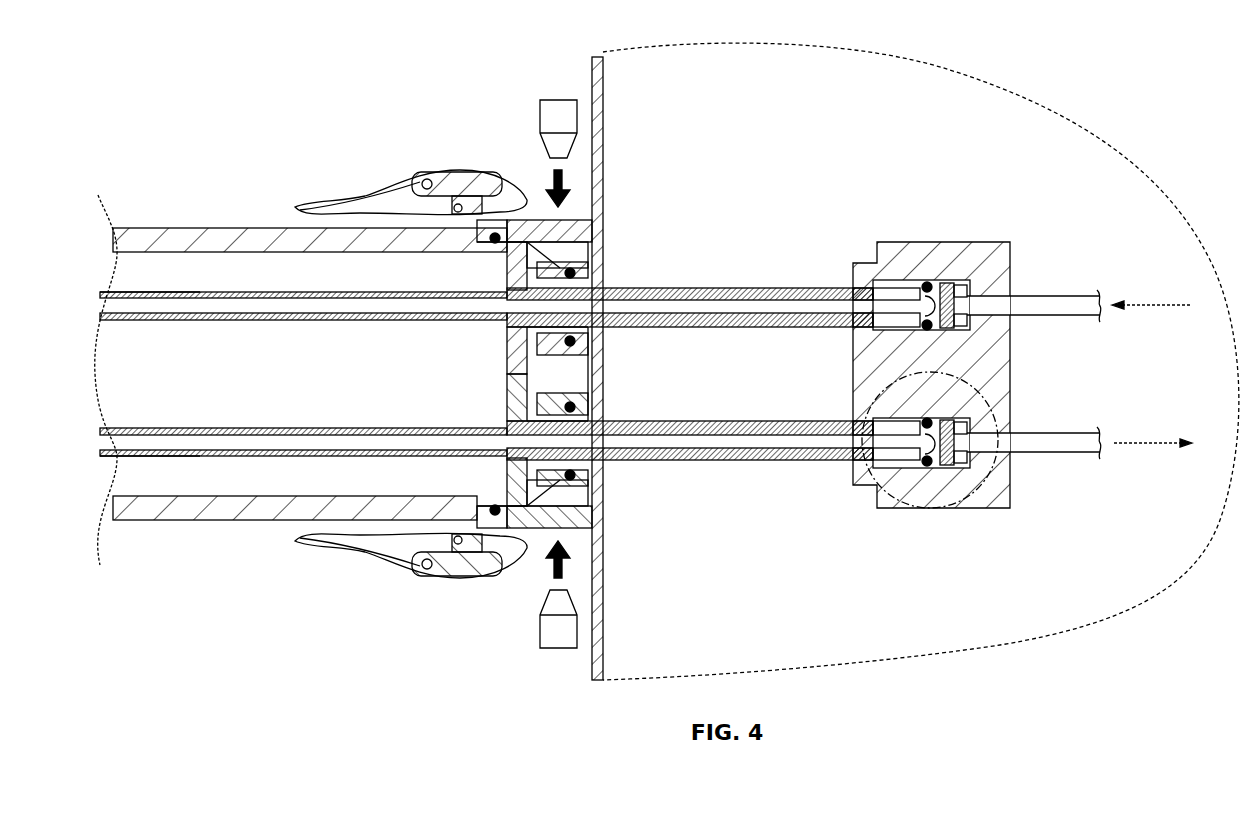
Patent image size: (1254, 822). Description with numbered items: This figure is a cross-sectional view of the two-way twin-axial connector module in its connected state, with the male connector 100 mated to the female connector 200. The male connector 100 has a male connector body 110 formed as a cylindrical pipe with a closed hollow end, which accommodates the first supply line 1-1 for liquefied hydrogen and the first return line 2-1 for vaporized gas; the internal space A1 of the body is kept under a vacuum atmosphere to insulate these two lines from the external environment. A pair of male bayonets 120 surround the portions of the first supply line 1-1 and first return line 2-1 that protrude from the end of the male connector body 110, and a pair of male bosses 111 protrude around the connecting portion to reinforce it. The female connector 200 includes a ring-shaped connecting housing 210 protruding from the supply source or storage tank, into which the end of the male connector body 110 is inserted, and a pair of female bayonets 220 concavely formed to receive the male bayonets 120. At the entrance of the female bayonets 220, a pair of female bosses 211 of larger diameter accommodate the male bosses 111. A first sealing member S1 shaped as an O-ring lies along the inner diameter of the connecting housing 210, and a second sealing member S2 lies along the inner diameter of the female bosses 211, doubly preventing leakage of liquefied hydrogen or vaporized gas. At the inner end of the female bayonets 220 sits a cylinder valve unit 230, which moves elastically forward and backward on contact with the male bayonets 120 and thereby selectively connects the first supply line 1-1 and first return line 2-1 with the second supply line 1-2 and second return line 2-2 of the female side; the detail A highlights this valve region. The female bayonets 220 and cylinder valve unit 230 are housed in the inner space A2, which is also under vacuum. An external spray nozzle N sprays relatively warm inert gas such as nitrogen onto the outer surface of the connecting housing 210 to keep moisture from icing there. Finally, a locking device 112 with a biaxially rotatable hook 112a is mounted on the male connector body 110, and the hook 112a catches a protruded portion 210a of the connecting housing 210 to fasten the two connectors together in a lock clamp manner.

The male connector 100 is at (205, 150).
The male connector body 110 is at (217, 240).
The male bosses 111 is at (505, 283).
The locking device 112 is at (355, 205).
The hook 112a is at (458, 175).
The male bayonets 120 is at (815, 286).
The female connector 200 is at (712, 150).
The connecting housing 210 is at (603, 200).
The protruded portion 210a is at (510, 218).
The female bosses 211 is at (603, 250).
The female bayonets 220 is at (750, 286).
The cylinder valve unit 230 is at (925, 243).
The first return line 2-1 is at (163, 293).
The second return line 2-2 is at (1050, 297).
The first supply line 1-1 is at (170, 458).
The second supply line 1-2 is at (1055, 455).
The first sealing member S1 is at (490, 225).
The second sealing member S2 is at (603, 270).
The external spray nozzle N is at (560, 115).
The internal space A1 is at (443, 387).
The inner space A2 is at (638, 387).
The detail A is at (866, 503).